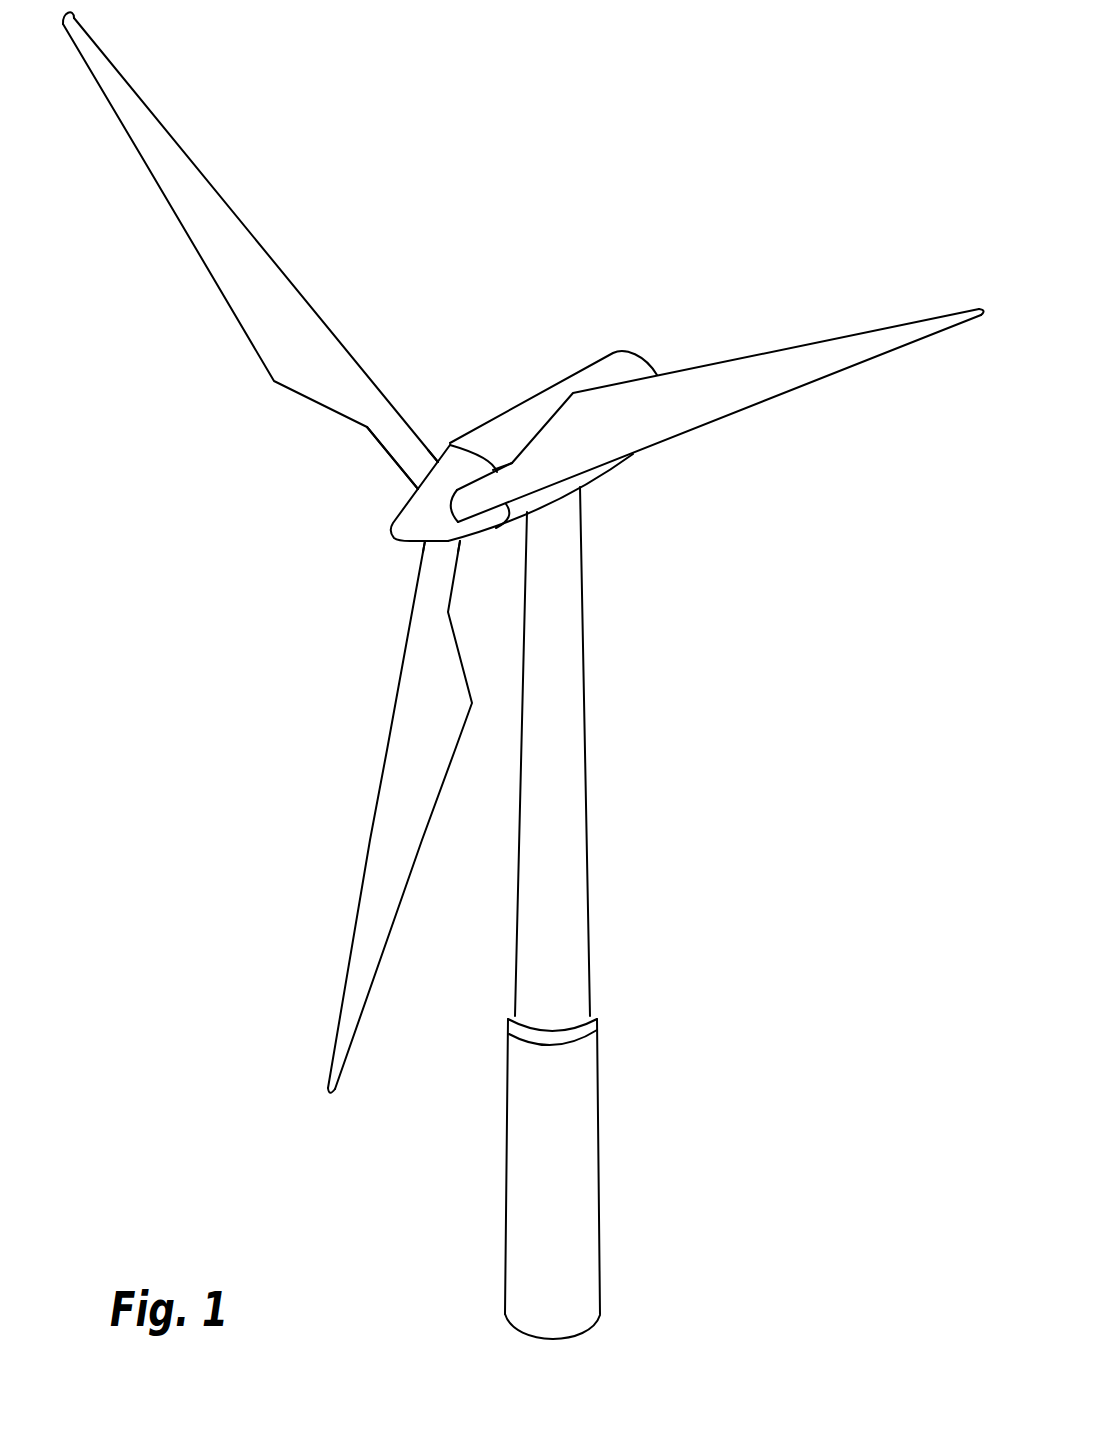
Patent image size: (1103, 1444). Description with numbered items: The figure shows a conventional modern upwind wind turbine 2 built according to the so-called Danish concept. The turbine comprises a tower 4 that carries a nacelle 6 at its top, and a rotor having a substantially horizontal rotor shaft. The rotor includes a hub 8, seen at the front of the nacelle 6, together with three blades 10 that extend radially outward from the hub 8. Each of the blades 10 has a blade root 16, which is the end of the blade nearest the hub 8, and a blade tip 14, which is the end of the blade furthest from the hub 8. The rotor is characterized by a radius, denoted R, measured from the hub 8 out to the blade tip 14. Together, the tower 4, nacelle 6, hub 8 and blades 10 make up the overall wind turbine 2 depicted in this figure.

The wind turbine 2 is at (692, 840).
The tower 4 is at (573, 753).
The nacelle 6 is at (513, 422).
The hub 8 is at (407, 517).
The blades 10 is at (287, 348).
The blade tip 14 is at (110, 80).
The blade root 16 is at (417, 467).